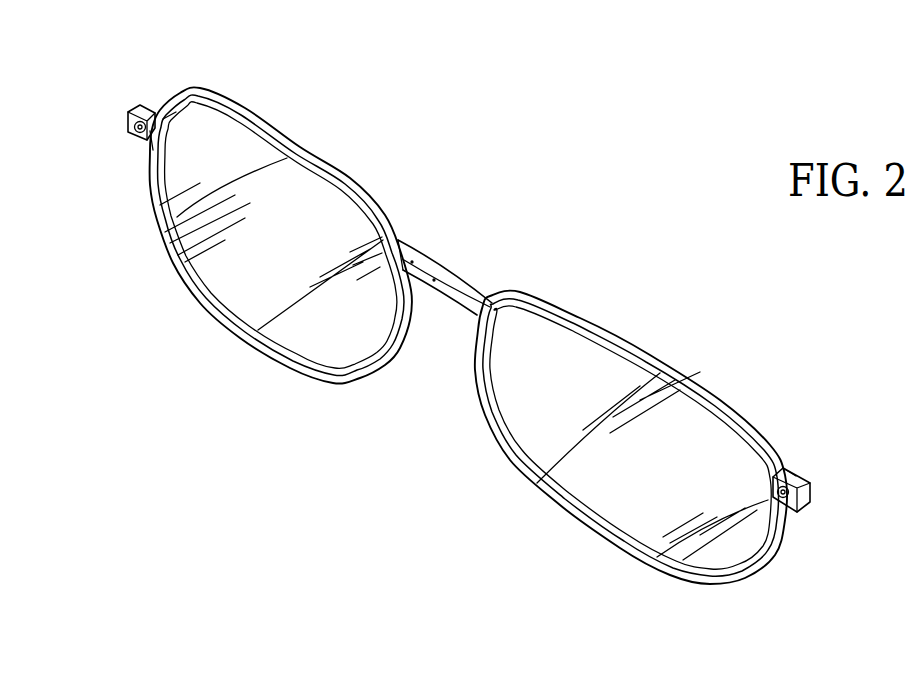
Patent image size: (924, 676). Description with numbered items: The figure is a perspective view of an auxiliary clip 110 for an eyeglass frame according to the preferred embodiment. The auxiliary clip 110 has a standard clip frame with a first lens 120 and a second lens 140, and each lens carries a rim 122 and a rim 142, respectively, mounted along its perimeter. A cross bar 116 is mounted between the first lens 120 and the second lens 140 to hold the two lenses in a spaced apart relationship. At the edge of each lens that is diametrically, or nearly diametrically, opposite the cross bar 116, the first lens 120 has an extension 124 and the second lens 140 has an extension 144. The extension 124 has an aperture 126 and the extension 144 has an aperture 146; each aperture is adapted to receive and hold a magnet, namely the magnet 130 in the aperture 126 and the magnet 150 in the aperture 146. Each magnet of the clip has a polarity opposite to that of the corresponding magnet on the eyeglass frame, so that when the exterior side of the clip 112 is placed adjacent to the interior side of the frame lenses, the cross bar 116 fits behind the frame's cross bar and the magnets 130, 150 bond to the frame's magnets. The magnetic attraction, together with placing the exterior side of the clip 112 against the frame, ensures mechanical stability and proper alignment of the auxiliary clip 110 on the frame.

The auxiliary clip 110 is at (255, 472).
The exterior side of the clip 112 is at (397, 472).
The cross bar 116 is at (455, 285).
The first lens 120 is at (247, 285).
The rim 122 is at (275, 132).
The extension 124 is at (108, 103).
The aperture 126 is at (187, 125).
The magnet 130 is at (131, 140).
The second lens 140 is at (610, 487).
The rim 142 is at (642, 345).
The extension 144 is at (790, 493).
The aperture 146 is at (800, 470).
The magnet 150 is at (775, 491).